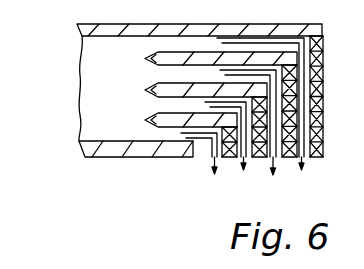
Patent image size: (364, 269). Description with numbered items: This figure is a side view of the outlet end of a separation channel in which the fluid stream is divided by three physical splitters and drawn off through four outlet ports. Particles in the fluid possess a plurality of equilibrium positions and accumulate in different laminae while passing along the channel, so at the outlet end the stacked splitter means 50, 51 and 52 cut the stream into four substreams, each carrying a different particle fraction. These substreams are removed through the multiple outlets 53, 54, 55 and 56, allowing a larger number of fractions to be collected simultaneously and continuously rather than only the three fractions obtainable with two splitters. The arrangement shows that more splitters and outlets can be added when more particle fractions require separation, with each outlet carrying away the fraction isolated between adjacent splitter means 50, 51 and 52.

The splitter means 50 is at (151, 62).
The splitter means 51 is at (150, 92).
The splitter means 52 is at (151, 120).
The outlet 53 is at (199, 157).
The outlet 54 is at (253, 166).
The outlet 55 is at (286, 166).
The outlet 56 is at (324, 166).